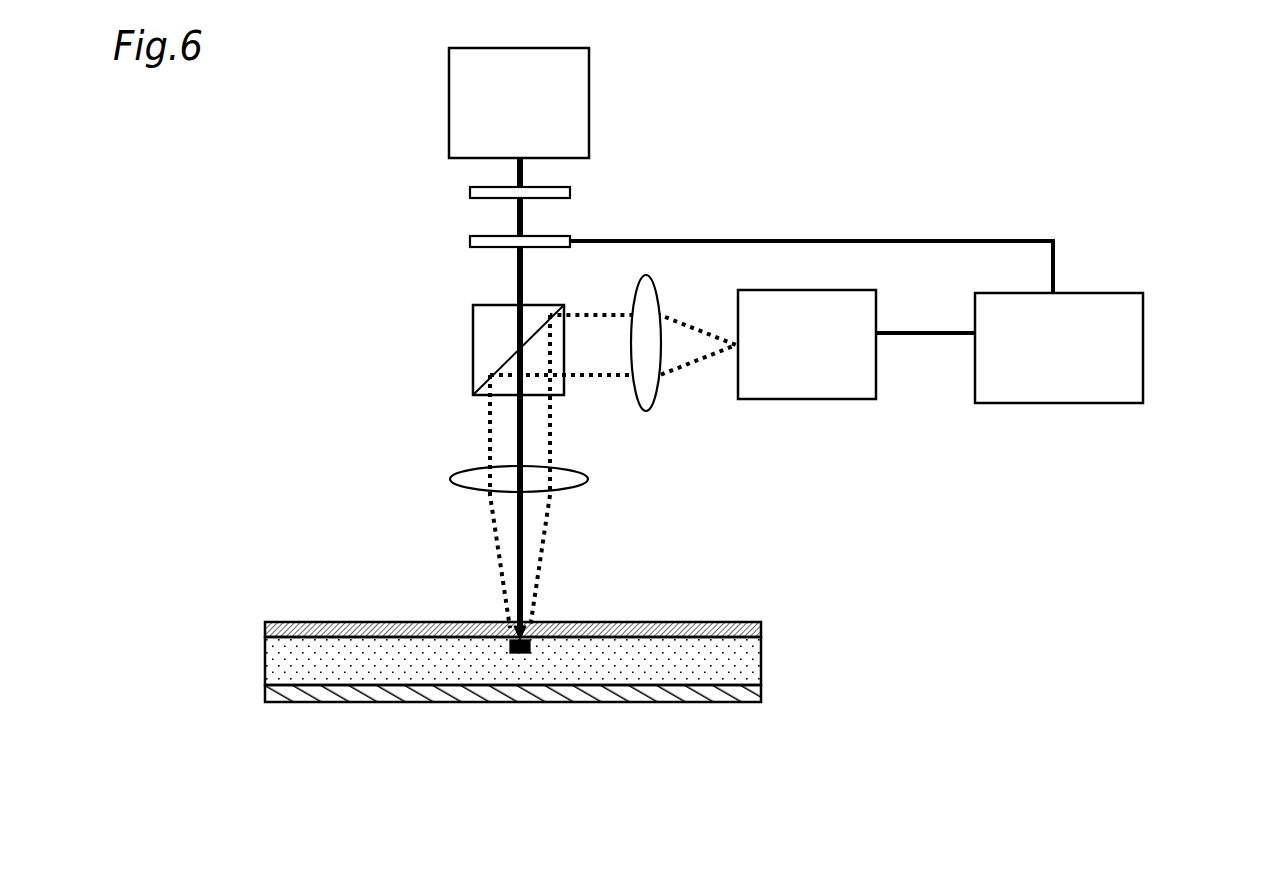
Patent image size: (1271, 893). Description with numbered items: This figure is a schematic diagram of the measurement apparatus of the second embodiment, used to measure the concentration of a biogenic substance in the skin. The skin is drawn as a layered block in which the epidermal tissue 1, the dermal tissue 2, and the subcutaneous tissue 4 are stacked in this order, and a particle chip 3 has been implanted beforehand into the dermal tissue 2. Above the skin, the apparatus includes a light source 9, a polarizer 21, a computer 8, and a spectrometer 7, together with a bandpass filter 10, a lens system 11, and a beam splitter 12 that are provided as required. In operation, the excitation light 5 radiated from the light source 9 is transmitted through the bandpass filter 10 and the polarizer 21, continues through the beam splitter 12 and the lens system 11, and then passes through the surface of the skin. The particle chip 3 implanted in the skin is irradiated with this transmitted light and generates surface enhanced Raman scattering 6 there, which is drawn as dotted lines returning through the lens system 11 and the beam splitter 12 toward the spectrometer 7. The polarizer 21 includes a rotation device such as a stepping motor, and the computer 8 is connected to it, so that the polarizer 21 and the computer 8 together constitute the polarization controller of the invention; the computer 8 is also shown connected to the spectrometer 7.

The epidermal tissue 1 is at (763, 627).
The dermal tissue 2 is at (763, 660).
The particle chip 3 is at (532, 647).
The subcutaneous tissue 4 is at (763, 690).
The excitation light 5 is at (517, 292).
The surface enhanced Raman scattering 6 is at (550, 533).
The spectrometer 7 is at (807, 400).
The computer 8 is at (1062, 403).
The light source 9 is at (589, 103).
The bandpass filter 10 is at (570, 191).
The lens system 11 is at (646, 411).
The beam splitter 12 is at (473, 350).
The polarizer 21 is at (470, 241).